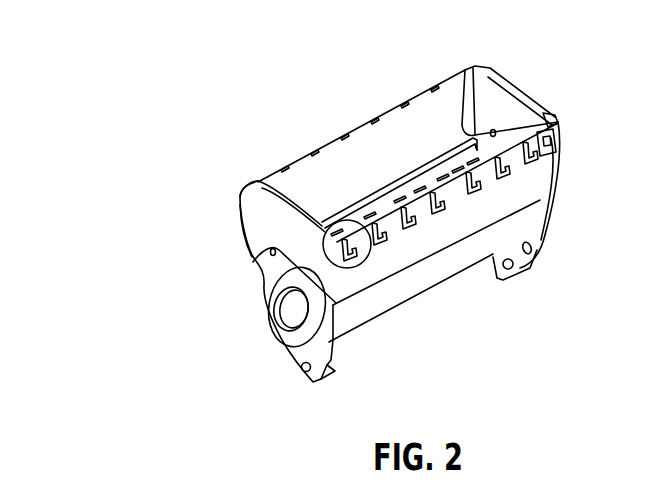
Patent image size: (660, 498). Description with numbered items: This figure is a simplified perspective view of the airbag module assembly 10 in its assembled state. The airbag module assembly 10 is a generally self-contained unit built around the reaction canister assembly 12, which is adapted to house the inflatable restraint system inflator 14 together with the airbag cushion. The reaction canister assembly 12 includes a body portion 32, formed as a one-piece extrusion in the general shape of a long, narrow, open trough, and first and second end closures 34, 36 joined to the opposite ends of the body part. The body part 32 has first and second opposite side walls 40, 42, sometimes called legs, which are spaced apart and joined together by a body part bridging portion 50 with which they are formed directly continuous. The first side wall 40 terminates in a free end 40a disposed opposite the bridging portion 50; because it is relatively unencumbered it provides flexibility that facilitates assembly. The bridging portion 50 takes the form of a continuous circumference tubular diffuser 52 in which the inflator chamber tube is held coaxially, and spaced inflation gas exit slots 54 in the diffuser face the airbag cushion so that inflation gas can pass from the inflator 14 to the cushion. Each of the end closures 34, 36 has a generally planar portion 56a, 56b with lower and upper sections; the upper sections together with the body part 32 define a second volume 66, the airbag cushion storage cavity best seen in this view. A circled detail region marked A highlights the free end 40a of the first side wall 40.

The airbag module assembly 10 is at (275, 92).
The reaction canister assembly 12 is at (223, 224).
The inflatable restraint system inflator 14 is at (287, 308).
The body portion 32 is at (501, 234).
The first end closure 34 is at (530, 120).
The second end closure 36 is at (285, 338).
The first side wall 40 is at (512, 190).
The free end of first side wall 40a is at (373, 226).
The second side wall 42 is at (325, 187).
The body part bridging portion 50 is at (358, 312).
The tubular diffuser 52 is at (487, 153).
The inflation gas exit slots 54 is at (378, 218).
The planar portion of first end closure 56a is at (566, 118).
The planar portion of second end closure 56b is at (243, 250).
The second volume 66 is at (434, 119).
The detail A is at (366, 259).